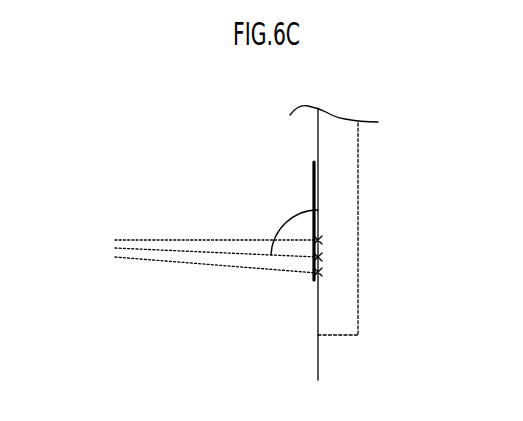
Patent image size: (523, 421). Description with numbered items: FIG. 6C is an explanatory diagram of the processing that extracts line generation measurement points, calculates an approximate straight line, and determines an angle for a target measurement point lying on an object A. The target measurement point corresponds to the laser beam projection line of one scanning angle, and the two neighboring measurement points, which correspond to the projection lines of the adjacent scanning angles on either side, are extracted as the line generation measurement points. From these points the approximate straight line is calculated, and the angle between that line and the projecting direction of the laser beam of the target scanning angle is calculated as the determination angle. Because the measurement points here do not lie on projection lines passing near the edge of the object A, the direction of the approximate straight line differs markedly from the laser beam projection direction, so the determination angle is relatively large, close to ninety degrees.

The object / workpiece body A is at (314, 139).